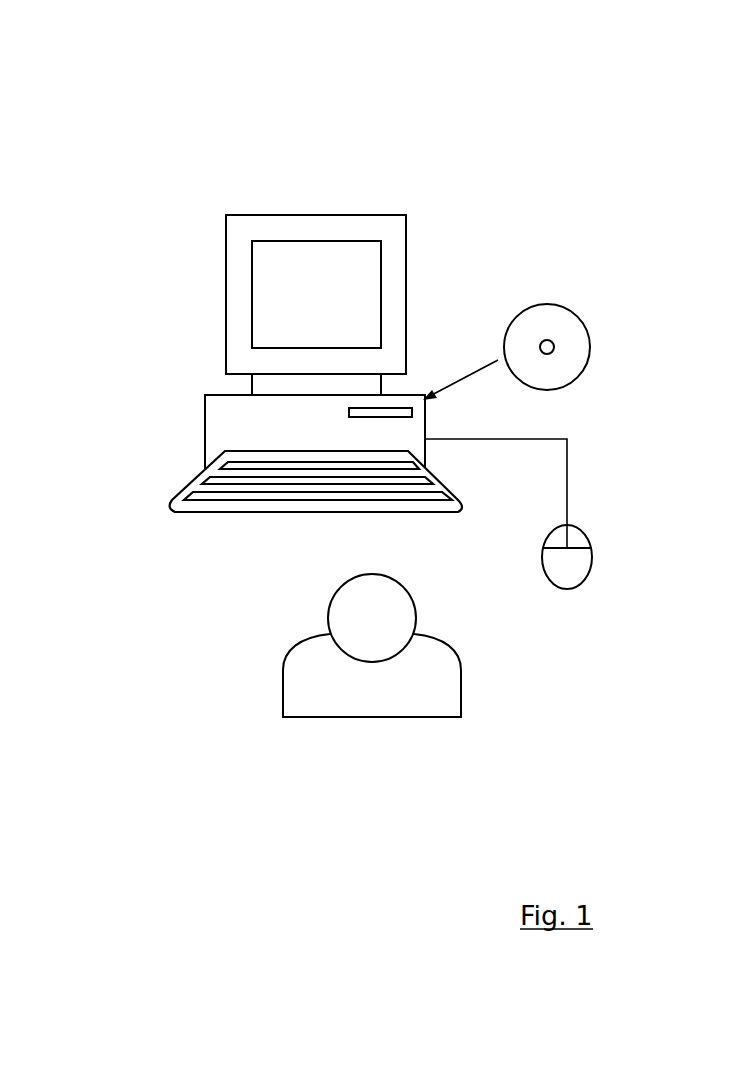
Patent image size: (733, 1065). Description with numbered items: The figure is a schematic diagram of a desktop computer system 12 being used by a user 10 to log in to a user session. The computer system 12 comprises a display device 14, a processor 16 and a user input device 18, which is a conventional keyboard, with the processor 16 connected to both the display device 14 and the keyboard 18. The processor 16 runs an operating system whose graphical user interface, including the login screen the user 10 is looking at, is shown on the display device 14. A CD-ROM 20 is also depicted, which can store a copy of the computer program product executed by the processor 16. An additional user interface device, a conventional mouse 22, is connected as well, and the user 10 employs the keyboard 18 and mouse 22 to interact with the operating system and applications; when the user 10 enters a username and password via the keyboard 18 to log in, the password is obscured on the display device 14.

The user 10 is at (282, 685).
The desktop computer system 12 is at (122, 96).
The display device 14 is at (406, 238).
The processor 16 is at (205, 415).
The user input device 18 is at (168, 500).
The CD-ROM 20 is at (590, 340).
The mouse 22 is at (592, 560).